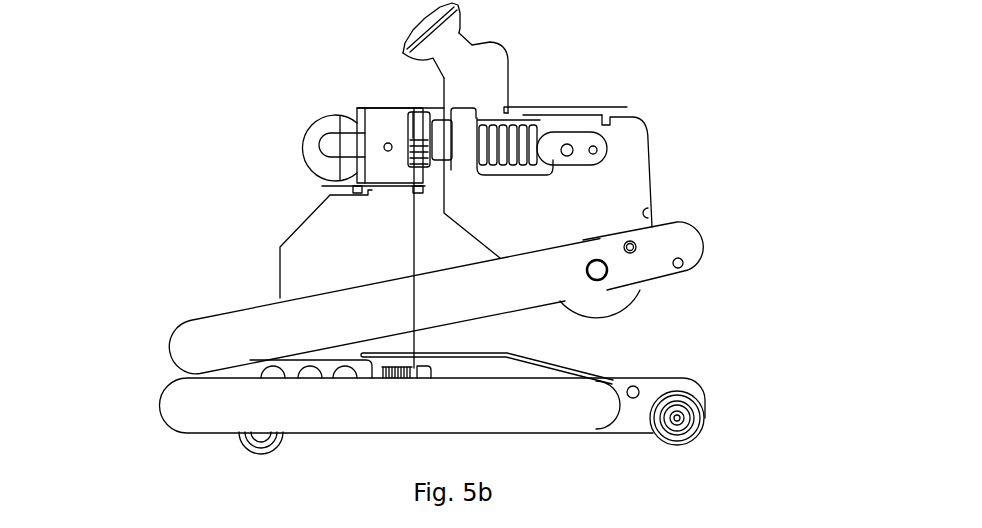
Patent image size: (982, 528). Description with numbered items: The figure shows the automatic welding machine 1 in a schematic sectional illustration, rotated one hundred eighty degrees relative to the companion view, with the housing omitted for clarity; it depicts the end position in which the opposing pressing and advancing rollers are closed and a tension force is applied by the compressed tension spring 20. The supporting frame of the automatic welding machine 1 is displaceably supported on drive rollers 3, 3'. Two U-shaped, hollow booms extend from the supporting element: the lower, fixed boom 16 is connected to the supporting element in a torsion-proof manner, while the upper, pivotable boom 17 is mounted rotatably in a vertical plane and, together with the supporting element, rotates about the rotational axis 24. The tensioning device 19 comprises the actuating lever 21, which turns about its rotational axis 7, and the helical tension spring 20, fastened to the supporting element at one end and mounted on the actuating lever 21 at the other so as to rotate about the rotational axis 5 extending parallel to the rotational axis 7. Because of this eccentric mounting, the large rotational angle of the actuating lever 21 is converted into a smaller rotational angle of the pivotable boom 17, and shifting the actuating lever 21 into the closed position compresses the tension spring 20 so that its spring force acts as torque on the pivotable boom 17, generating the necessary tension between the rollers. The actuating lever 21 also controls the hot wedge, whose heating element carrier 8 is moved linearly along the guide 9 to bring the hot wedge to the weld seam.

The automatic welding machine 1 is at (293, 97).
The drive roller 3 is at (720, 406).
The drive roller 3' is at (516, 453).
The rotational axis 5 is at (573, 150).
The rotational axis 7 is at (597, 150).
The heating element carrier 8 is at (352, 260).
The guide 9 is at (307, 142).
The fixed boom 16 is at (285, 407).
The pivotable boom 17 is at (270, 335).
The tensioning device 19 is at (563, 198).
The tension spring 20 is at (515, 142).
The actuating lever 21 is at (478, 80).
The rotational axis 24 is at (602, 272).